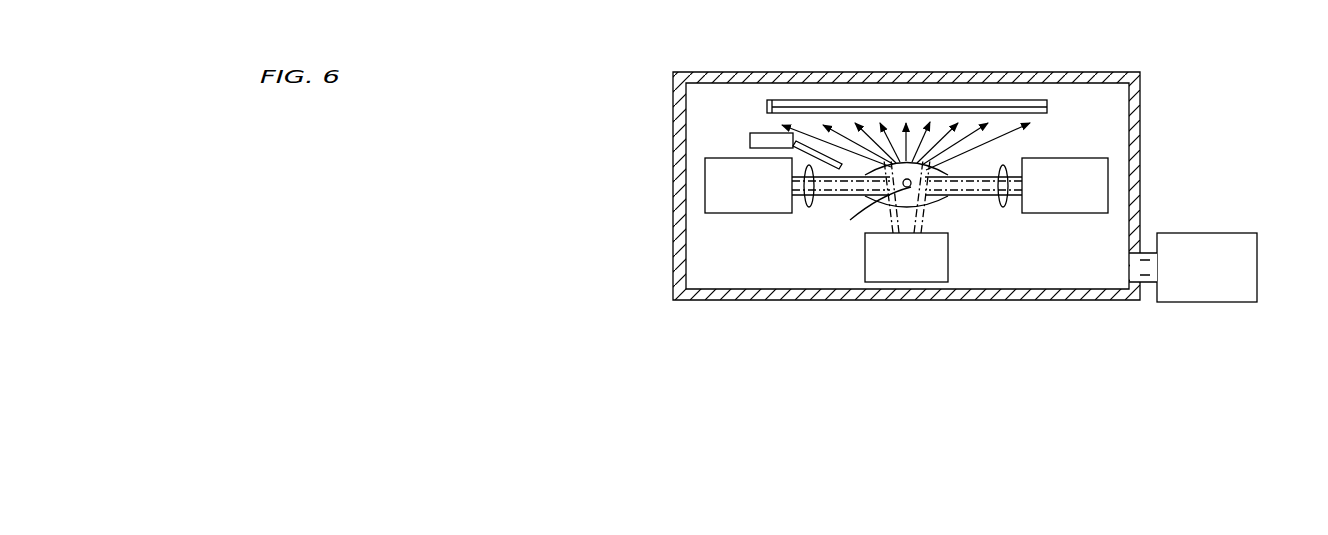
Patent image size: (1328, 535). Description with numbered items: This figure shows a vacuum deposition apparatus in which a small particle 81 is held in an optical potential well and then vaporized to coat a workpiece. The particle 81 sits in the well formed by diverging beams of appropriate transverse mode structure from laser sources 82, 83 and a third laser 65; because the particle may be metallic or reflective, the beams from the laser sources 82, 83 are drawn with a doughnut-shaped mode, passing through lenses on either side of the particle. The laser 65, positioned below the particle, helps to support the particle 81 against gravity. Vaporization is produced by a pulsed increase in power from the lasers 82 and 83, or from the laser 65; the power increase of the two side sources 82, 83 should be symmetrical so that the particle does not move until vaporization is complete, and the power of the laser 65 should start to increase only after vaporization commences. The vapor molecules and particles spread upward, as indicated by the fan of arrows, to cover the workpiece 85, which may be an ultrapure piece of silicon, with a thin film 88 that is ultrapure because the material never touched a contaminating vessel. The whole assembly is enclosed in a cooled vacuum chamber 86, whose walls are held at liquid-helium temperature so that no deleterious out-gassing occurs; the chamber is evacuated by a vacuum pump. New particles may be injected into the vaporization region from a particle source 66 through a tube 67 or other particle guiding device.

The laser 65 is at (949, 258).
The particle source 66 is at (767, 138).
The tube 67 is at (824, 167).
The particle 81 is at (1170, 92).
The laser source 82 is at (727, 190).
The laser source 83 is at (1218, 334).
The workpiece 85 is at (1047, 102).
The vacuum chamber 86 is at (1018, 82).
The thin film 88 is at (767, 113).